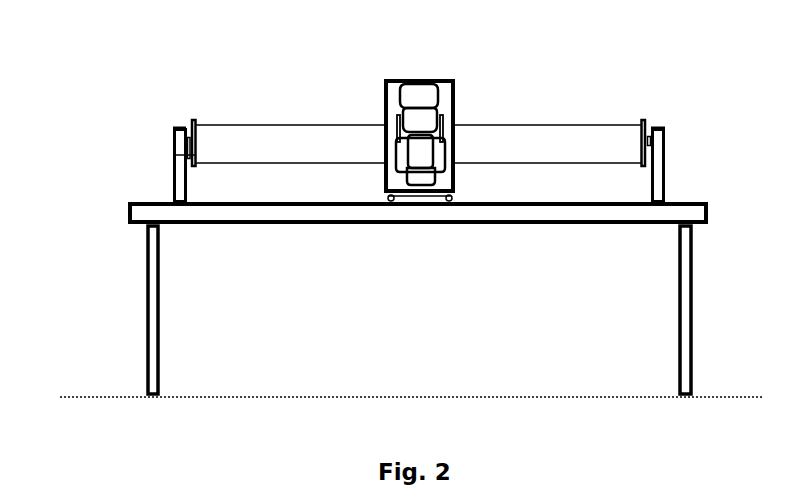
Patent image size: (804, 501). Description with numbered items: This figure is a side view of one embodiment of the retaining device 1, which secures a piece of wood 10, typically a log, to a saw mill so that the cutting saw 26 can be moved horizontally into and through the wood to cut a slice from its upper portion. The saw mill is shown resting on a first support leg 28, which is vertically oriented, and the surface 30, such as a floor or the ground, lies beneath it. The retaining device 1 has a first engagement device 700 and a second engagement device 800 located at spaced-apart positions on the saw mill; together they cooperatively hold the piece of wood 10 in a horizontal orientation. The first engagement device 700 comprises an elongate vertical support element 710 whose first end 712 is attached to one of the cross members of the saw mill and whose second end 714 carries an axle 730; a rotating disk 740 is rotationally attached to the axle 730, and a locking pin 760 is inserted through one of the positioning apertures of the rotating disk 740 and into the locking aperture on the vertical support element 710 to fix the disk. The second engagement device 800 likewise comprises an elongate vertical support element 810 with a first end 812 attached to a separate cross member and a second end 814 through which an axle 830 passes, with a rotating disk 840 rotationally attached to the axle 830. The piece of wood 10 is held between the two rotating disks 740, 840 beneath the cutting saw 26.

The retaining device 1 is at (78, 101).
The piece of wood 10 is at (312, 133).
The cutting saw 26 is at (455, 93).
The first support leg 28 is at (693, 300).
The surface 30 is at (95, 395).
The first engagement device 700 is at (164, 126).
The vertical support element 710 is at (135, 155).
The first end 712 is at (178, 180).
The second end 714 is at (173, 128).
The axle 730 is at (188, 137).
The rotating disk 740 is at (195, 119).
The locking pin 760 is at (168, 118).
The second engagement device 800 is at (674, 127).
The vertical support element 810 is at (701, 159).
The first end 812 is at (667, 201).
The second end 814 is at (665, 128).
The axle 830 is at (649, 136).
The rotating disk 840 is at (643, 119).